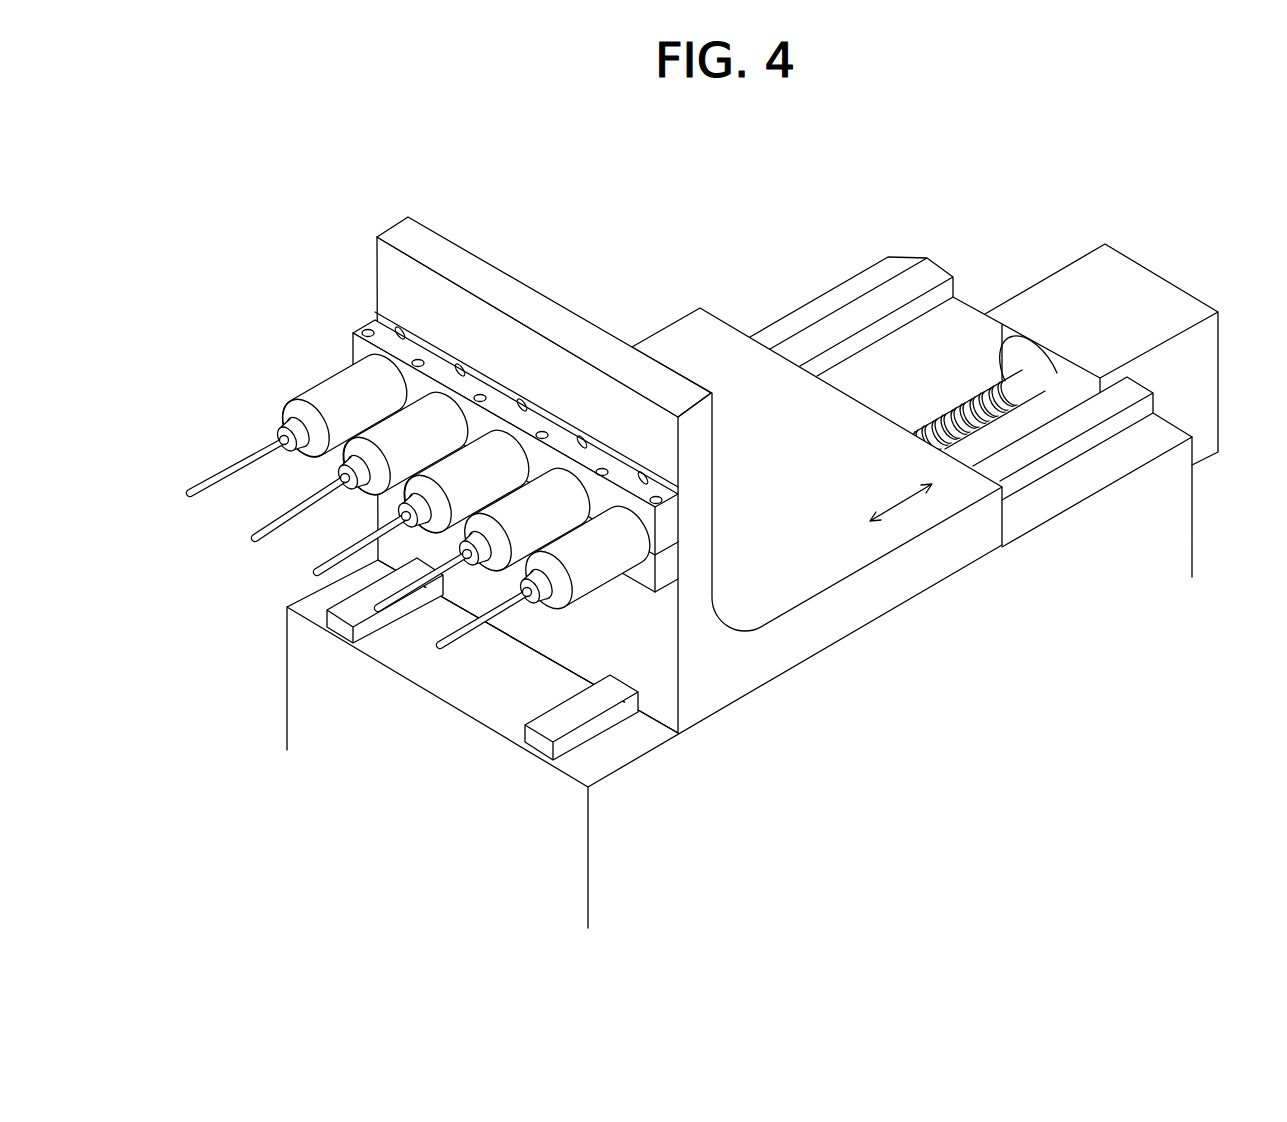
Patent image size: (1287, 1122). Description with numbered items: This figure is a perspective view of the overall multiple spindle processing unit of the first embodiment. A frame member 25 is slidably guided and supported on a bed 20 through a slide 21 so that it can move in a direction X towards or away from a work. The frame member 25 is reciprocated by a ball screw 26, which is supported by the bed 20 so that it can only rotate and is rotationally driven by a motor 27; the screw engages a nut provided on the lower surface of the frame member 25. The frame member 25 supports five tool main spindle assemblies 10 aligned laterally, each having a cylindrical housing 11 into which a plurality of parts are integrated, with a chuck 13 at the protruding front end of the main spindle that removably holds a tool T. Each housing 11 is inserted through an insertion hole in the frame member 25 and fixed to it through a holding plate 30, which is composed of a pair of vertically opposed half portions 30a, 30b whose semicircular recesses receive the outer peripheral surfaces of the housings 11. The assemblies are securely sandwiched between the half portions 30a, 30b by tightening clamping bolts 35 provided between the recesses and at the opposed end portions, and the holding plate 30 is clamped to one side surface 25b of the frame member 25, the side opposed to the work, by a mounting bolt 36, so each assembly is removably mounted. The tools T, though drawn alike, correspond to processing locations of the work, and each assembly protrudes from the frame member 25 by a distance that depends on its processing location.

The tool main spindle assembly 10 is at (410, 503).
The cylindrical housing 11 is at (352, 390).
The chuck 13 is at (284, 436).
The tool T is at (220, 478).
The bed 20 is at (1177, 546).
The slide 21 is at (873, 300).
The frame member 25 is at (648, 475).
The one side surface 25b is at (397, 278).
The ball screw 26 is at (960, 420).
The motor 27 is at (1065, 297).
The holding plate 30 is at (574, 454).
The half portion 30a is at (665, 521).
The half portion 30b is at (668, 572).
The clamping bolt 35 is at (481, 393).
The mounting bolt 36 is at (530, 404).
The direction X is at (900, 497).